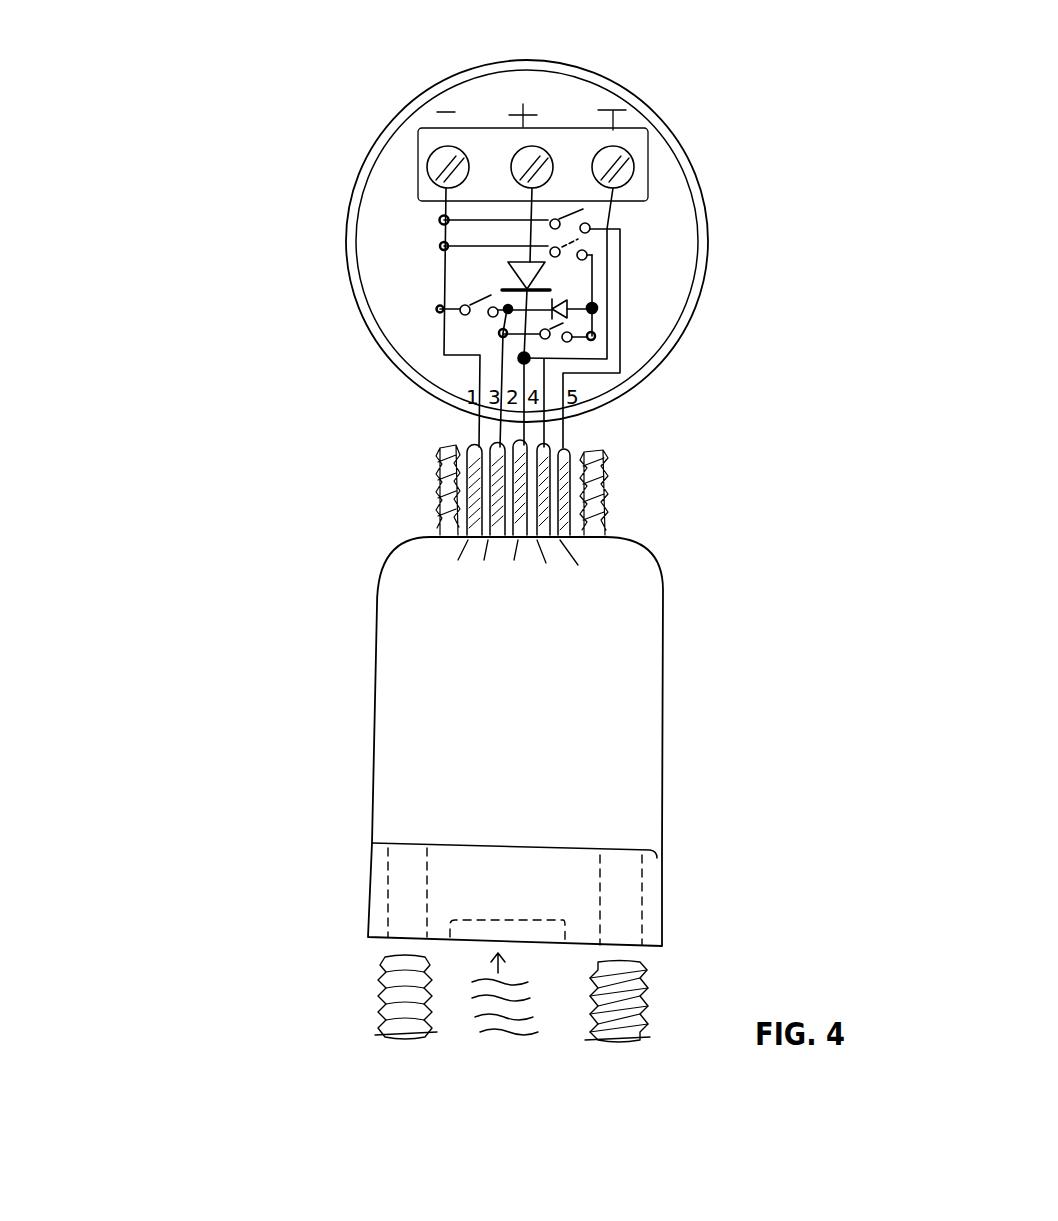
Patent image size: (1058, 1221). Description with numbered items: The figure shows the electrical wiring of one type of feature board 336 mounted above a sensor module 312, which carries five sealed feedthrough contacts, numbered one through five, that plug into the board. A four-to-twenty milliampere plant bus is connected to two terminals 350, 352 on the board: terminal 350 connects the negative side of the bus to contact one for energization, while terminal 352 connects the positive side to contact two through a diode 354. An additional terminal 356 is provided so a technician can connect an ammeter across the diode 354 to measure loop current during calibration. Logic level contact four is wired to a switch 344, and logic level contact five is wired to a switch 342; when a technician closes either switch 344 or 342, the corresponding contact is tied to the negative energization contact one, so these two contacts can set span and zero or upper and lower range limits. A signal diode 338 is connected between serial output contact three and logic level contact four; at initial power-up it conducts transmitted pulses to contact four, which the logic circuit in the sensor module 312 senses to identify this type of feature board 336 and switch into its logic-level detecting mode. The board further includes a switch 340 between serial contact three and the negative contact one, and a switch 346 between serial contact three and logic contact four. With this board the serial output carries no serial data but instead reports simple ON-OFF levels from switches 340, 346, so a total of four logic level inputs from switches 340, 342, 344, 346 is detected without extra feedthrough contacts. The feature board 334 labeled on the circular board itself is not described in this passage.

The sensor module 312 is at (372, 698).
The feature board 334 is at (358, 240).
The feature board 336 is at (737, 416).
The signal diode 338 is at (553, 307).
The switch 340 is at (478, 296).
The switch 342 is at (570, 217).
The switch 344 is at (572, 250).
The switch 346 is at (573, 342).
The terminal 350 is at (422, 163).
The terminal 352 is at (513, 158).
The diode 354 is at (505, 268).
The additional terminal 356 is at (632, 150).